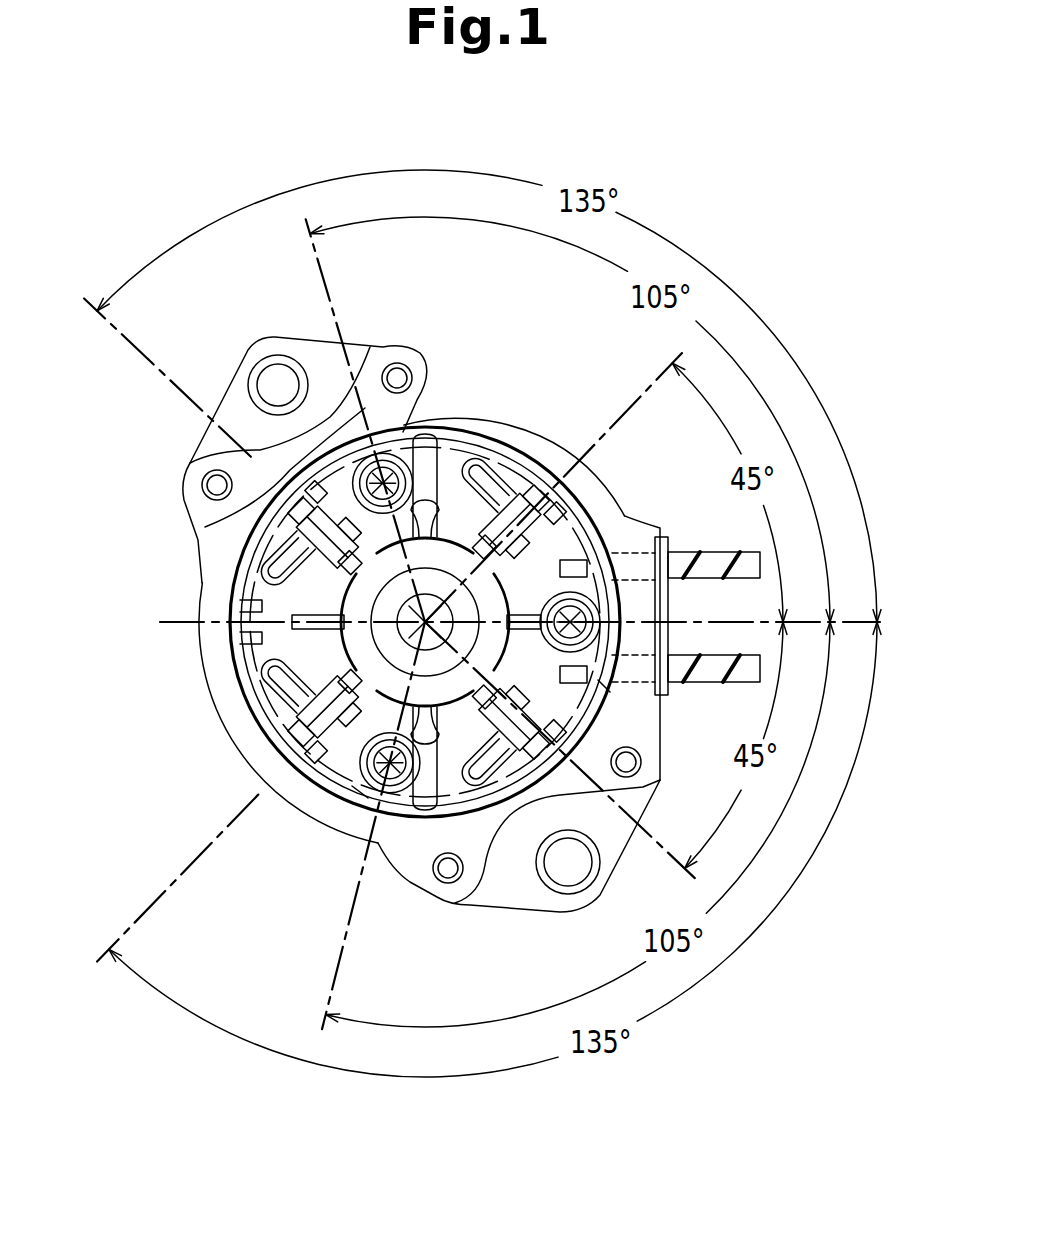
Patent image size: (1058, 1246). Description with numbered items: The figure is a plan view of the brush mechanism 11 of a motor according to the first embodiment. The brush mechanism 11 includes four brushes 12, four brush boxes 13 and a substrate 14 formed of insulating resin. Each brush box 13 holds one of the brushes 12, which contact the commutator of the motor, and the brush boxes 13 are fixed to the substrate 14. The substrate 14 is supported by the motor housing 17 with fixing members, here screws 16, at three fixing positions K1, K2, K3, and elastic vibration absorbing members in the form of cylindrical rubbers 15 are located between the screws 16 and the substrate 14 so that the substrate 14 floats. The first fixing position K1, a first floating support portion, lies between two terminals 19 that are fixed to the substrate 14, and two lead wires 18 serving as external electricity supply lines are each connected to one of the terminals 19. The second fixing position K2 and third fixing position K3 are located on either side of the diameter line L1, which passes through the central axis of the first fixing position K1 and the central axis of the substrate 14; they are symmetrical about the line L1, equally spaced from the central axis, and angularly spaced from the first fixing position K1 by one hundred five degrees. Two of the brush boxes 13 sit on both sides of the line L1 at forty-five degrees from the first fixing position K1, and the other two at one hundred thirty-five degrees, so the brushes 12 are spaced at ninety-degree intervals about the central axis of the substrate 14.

The brush mechanism 11 is at (217, 610).
The brush 12 is at (462, 557).
The brush box 13 is at (540, 483).
The substrate 14 is at (456, 782).
The cylindrical rubber 15 is at (412, 462).
The screw 16 is at (331, 420).
The motor housing 17 is at (655, 766).
The lead wire 18 is at (702, 558).
The terminal 19 is at (590, 527).
The first fixing position K1 is at (624, 606).
The second fixing position K2 is at (403, 434).
The third fixing position K3 is at (361, 809).
The diameter line L1 is at (178, 636).